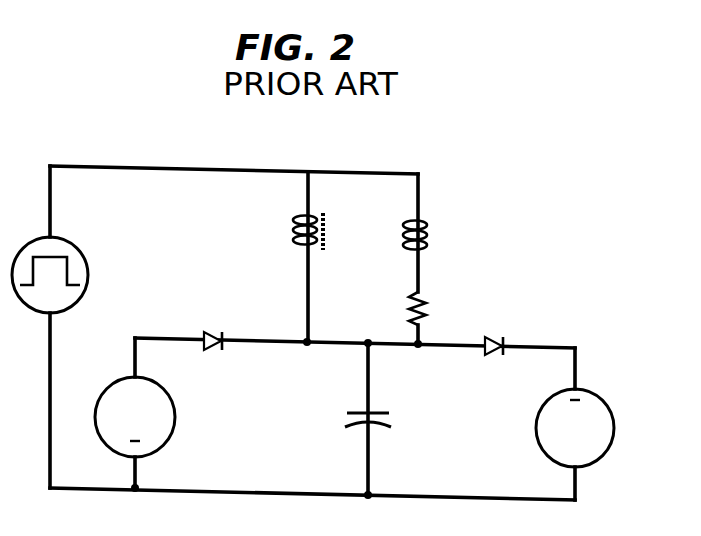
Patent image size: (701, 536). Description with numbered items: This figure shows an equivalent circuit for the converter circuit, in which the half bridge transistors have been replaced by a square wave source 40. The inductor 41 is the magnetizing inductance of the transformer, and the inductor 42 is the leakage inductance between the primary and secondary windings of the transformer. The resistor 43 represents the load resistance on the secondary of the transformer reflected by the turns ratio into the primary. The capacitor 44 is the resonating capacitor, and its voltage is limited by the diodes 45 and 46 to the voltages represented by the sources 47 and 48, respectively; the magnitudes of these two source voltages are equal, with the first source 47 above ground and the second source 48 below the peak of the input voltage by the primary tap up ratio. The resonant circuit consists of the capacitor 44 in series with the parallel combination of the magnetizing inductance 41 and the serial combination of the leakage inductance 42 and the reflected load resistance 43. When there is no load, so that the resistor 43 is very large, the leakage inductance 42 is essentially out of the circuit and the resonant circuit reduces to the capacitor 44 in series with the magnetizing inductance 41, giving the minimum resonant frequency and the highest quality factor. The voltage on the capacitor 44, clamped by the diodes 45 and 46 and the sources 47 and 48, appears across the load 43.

The square wave source 40 is at (87, 263).
The inductor 41 is at (325, 222).
The inductor 42 is at (429, 226).
The resistor 43 is at (424, 300).
The capacitor 44 is at (386, 411).
The diode 45 is at (211, 350).
The diode 46 is at (488, 353).
The source 47 is at (176, 417).
The source 48 is at (611, 415).